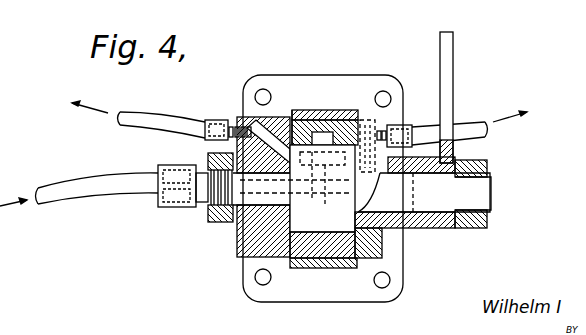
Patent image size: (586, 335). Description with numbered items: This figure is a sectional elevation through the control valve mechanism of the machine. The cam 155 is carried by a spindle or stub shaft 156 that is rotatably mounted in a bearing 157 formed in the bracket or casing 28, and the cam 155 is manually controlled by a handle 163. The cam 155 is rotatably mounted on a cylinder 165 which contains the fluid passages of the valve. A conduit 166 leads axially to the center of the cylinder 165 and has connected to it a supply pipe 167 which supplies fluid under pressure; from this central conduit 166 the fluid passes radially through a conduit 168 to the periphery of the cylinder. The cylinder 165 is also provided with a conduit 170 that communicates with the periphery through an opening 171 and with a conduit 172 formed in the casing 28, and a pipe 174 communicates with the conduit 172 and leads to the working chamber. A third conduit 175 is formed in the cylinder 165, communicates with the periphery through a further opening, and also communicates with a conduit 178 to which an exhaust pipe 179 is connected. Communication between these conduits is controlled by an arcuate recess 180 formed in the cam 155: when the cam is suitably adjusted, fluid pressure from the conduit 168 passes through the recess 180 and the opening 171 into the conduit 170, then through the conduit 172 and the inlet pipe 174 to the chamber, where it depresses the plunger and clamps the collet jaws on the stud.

The bracket or casing 28 is at (335, 133).
The cam 155 is at (322, 243).
The spindle or stub shaft 156 is at (473, 198).
The bearing 157 is at (240, 252).
The handle 163 is at (452, 85).
The cylinder 165 is at (340, 222).
The conduit 166 is at (240, 210).
The supply pipe 167 is at (113, 192).
The conduit 168 is at (297, 188).
The conduit 170 is at (310, 115).
The opening 171 is at (316, 132).
The conduit 172 is at (262, 133).
The pipe 174 is at (168, 118).
The third conduit 175 is at (347, 110).
The conduit 178 is at (385, 100).
The exhaust pipe 179 is at (475, 117).
The recess 180 is at (318, 133).